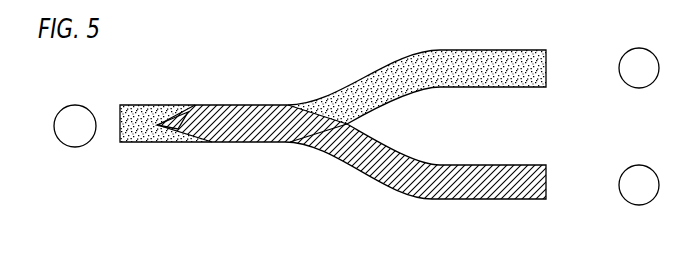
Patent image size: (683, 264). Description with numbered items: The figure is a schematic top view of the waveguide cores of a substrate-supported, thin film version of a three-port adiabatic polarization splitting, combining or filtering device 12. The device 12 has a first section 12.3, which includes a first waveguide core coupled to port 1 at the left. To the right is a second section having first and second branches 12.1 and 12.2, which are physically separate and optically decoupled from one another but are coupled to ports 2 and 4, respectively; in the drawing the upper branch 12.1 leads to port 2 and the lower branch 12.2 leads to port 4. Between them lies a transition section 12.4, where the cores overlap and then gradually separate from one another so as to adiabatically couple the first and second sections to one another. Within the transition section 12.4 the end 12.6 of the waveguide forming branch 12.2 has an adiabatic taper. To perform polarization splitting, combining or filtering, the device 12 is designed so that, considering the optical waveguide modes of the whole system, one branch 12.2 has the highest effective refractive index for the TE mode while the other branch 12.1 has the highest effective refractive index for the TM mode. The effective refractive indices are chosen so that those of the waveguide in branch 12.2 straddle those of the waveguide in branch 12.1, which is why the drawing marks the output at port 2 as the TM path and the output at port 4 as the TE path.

The 3-port device 12 is at (357, 42).
The first branch 12.1 is at (472, 60).
The second branch 12.2 is at (470, 188).
The first section 12.3 is at (136, 136).
The transition section 12.4 is at (245, 130).
The end of waveguide 12.6 is at (158, 126).
The port 1 is at (75, 126).
The port 2 is at (610, 68).
The port 4 is at (610, 185).